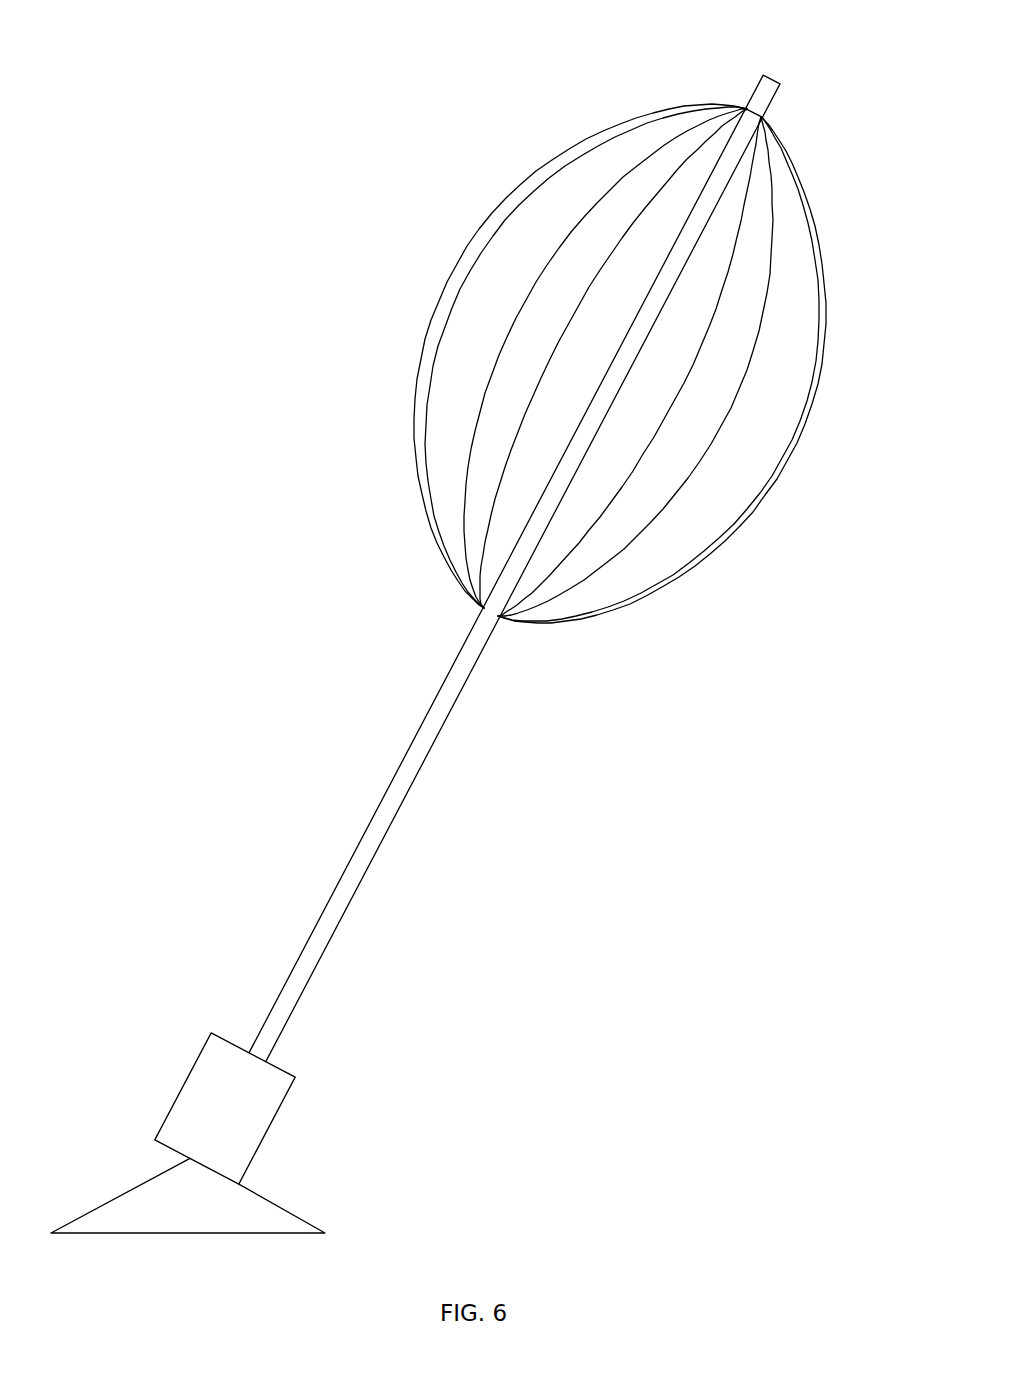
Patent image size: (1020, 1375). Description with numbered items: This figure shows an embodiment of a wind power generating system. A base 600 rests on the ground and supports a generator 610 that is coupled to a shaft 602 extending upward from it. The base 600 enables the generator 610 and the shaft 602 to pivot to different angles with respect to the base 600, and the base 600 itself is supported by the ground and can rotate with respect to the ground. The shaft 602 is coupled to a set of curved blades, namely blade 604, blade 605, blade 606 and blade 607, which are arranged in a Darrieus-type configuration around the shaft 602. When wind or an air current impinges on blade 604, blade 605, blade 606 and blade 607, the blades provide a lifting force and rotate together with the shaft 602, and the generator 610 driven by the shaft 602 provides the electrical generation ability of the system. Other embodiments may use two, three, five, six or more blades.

The base 600 is at (142, 1213).
The shaft 602 is at (333, 898).
The blade 604 is at (663, 110).
The blade 605 is at (512, 383).
The blade 606 is at (823, 293).
The blade 607 is at (641, 514).
The generator 610 is at (197, 1075).